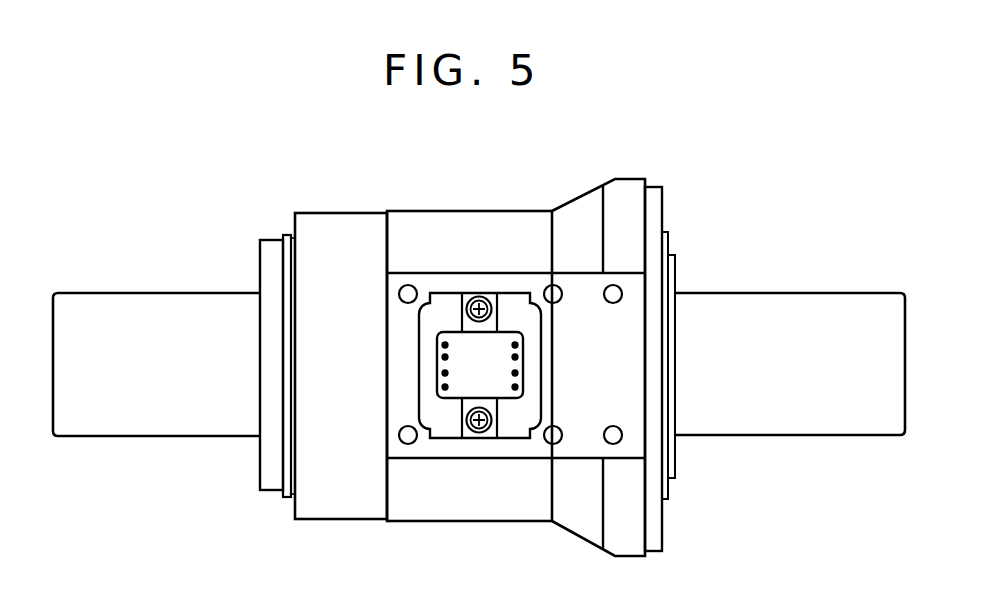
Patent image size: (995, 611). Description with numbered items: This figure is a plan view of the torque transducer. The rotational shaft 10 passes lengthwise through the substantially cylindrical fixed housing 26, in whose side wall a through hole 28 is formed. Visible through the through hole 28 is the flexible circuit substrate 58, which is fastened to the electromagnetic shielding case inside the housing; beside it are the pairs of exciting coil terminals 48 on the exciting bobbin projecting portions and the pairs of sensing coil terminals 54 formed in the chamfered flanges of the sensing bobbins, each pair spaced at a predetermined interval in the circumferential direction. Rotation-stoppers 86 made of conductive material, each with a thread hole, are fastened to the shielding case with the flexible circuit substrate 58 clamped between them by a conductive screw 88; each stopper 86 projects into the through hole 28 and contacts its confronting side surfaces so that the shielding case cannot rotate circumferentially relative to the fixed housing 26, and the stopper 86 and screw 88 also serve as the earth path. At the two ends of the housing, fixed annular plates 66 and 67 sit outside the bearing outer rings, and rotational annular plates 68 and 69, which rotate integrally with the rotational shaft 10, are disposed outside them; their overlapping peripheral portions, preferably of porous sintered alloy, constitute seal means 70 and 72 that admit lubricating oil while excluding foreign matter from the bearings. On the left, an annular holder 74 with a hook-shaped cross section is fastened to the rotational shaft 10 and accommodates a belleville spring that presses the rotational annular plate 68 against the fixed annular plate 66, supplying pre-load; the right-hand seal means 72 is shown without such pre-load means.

The rotational shaft 10 is at (812, 308).
The fixed housing 26 is at (462, 235).
The through hole 28 is at (513, 310).
The exciting coil terminals 48 is at (445, 357).
The sensing coil terminals 54 is at (445, 373).
The flexible circuit substrate 58 is at (497, 383).
The fixed annular plate 66 is at (288, 235).
The fixed annular plate 67 is at (667, 240).
The rotational annular plate 68 is at (288, 277).
The rotational annular plate 69 is at (675, 272).
The seal means 70 is at (290, 500).
The seal means 72 is at (678, 463).
The annular holder 74 is at (270, 252).
The rotation-stopper 86 is at (490, 297).
The screw 88 is at (470, 296).